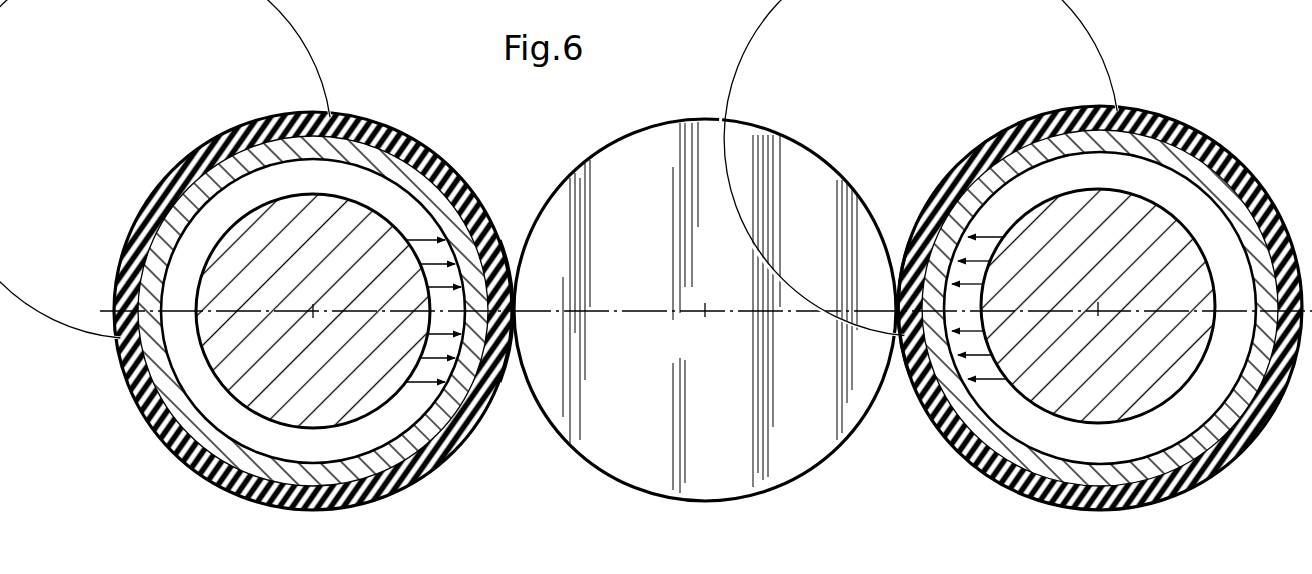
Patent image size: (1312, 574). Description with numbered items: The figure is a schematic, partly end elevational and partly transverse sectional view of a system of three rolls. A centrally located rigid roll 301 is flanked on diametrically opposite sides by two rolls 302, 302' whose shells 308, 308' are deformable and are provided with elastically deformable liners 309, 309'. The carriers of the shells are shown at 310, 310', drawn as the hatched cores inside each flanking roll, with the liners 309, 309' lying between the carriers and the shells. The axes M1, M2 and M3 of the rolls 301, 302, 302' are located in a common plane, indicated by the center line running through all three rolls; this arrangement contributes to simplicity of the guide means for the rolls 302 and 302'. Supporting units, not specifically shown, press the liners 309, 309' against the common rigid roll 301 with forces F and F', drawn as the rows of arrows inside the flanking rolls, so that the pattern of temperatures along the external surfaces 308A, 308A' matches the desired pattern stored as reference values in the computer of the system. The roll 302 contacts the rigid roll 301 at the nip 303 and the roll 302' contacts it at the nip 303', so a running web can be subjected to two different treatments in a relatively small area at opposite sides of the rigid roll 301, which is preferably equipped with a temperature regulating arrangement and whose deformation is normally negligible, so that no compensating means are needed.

The rigid roll 301 is at (773, 102).
The roll 302 is at (313, 274).
The roll 302' is at (1100, 273).
The nip 303 is at (524, 311).
The nip 303' is at (849, 308).
The shell 308 is at (313, 289).
The shell 308' is at (1100, 305).
The external surface 308A is at (252, 169).
The external surface 308A' is at (918, 167).
The elastically deformable liner 309 is at (313, 283).
The elastically deformable liner 309' is at (1110, 308).
The carrier 310 is at (313, 367).
The carrier 310' is at (1098, 369).
The force F is at (446, 351).
The force F' is at (970, 358).
The axis M1 is at (702, 313).
The axis M2 is at (312, 313).
The axis M3 is at (1100, 312).